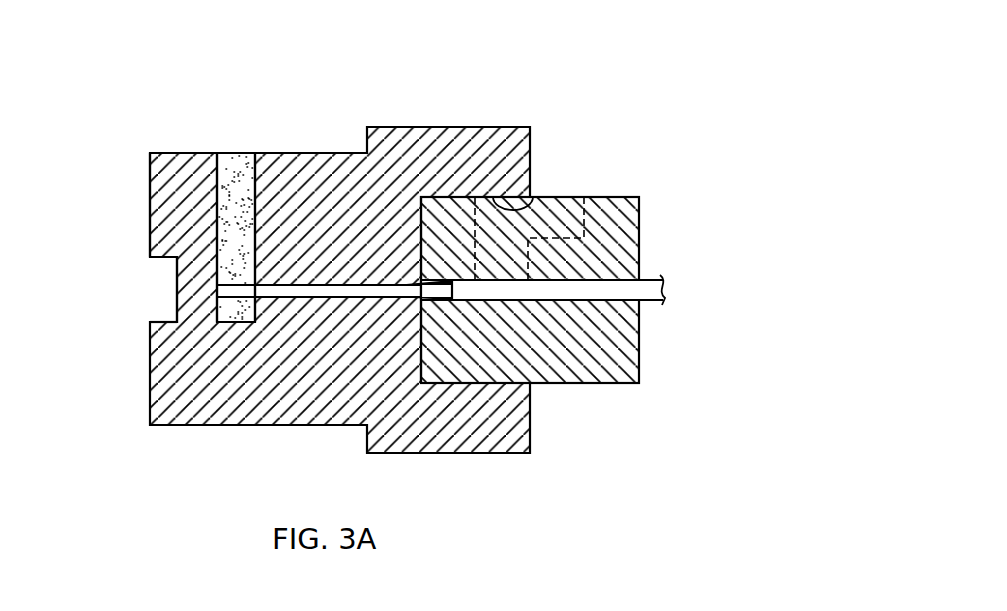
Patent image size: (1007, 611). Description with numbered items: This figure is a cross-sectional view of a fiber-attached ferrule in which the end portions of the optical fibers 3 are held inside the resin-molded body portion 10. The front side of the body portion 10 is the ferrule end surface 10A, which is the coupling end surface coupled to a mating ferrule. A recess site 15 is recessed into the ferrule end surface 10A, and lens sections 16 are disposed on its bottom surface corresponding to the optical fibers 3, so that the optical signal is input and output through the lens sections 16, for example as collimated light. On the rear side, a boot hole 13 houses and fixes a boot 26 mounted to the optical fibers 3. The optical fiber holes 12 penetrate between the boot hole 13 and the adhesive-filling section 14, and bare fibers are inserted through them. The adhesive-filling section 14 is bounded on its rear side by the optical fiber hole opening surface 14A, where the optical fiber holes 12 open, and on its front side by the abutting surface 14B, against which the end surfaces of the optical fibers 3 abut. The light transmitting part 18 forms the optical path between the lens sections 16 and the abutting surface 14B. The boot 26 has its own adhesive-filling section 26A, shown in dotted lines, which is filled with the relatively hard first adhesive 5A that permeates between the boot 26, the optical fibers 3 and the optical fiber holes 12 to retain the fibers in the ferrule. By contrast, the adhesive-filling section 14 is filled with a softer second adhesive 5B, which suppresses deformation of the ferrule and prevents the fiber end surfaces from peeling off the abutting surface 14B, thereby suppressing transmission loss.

The optical fiber 3 is at (306, 278).
The first adhesive 5A is at (442, 303).
The second adhesive 5B is at (231, 182).
The body portion 10 is at (339, 153).
The ferrule end surface 10A is at (150, 200).
The optical fiber hole 12 is at (343, 292).
The boot hole 13 is at (533, 197).
The adhesive-filling section 14 is at (217, 133).
The optical fiber hole opening surface 14A is at (262, 172).
The abutting surface 14B is at (220, 228).
The recess site 15 is at (150, 274).
The lens section 16 is at (173, 293).
The light transmitting part 18 is at (197, 287).
The boot 26 is at (636, 245).
The adhesive-filling section of boot 26A is at (578, 193).